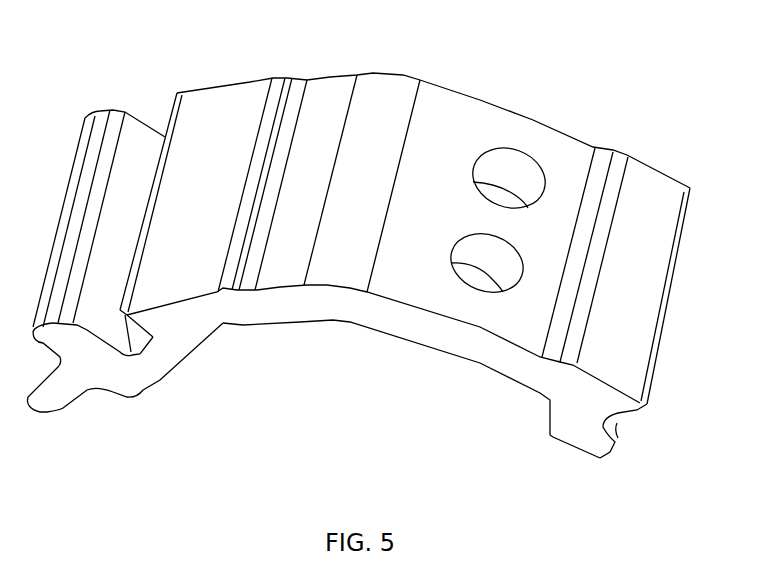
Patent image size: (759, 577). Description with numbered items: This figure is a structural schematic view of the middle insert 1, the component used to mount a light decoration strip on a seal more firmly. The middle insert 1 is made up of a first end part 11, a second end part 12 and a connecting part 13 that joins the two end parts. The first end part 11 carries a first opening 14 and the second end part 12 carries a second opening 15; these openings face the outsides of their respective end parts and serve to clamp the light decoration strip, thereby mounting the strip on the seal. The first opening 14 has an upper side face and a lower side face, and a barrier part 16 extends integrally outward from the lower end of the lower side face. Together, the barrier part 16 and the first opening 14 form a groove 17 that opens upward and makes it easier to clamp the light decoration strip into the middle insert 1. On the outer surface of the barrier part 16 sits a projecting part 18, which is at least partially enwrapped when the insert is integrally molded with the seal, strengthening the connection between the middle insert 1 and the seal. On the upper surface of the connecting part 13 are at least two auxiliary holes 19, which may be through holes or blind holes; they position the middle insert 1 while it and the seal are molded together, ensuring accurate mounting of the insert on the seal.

The middle insert 1 is at (617, 107).
The first end part 11 is at (210, 125).
The second end part 12 is at (647, 213).
The connecting part 13 is at (428, 123).
The first opening 14 is at (153, 338).
The second opening 15 is at (615, 428).
The barrier part 16 is at (108, 223).
The groove 17 is at (137, 340).
The projecting part 18 is at (52, 398).
The auxiliary holes 19 is at (515, 173).